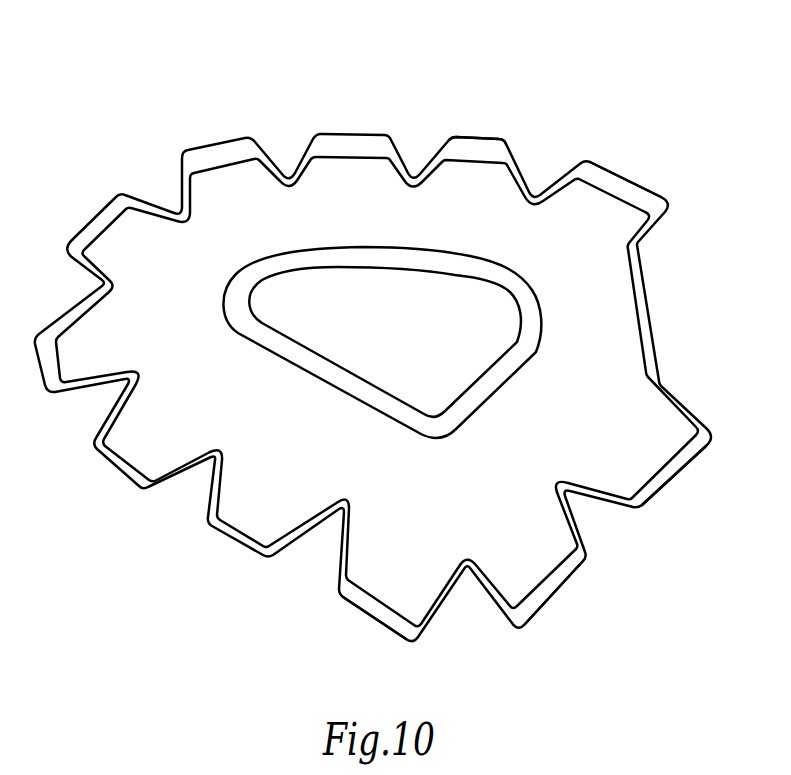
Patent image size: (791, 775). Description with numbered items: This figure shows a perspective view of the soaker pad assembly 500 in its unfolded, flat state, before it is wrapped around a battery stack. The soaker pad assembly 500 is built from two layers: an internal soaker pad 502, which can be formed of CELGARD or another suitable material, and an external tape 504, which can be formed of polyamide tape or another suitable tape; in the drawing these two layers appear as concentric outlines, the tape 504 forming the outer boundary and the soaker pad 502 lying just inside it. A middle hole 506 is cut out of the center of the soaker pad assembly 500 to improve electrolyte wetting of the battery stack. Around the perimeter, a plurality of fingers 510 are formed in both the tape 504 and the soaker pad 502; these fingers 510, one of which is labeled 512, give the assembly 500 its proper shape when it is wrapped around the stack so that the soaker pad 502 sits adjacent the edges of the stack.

The soaker pad assembly 500 is at (653, 42).
The internal soaker pad 502 is at (92, 215).
The external tape 504 is at (652, 157).
The middle hole 506 is at (380, 302).
The fingers 510 is at (672, 462).
The tooth 512 is at (482, 147).